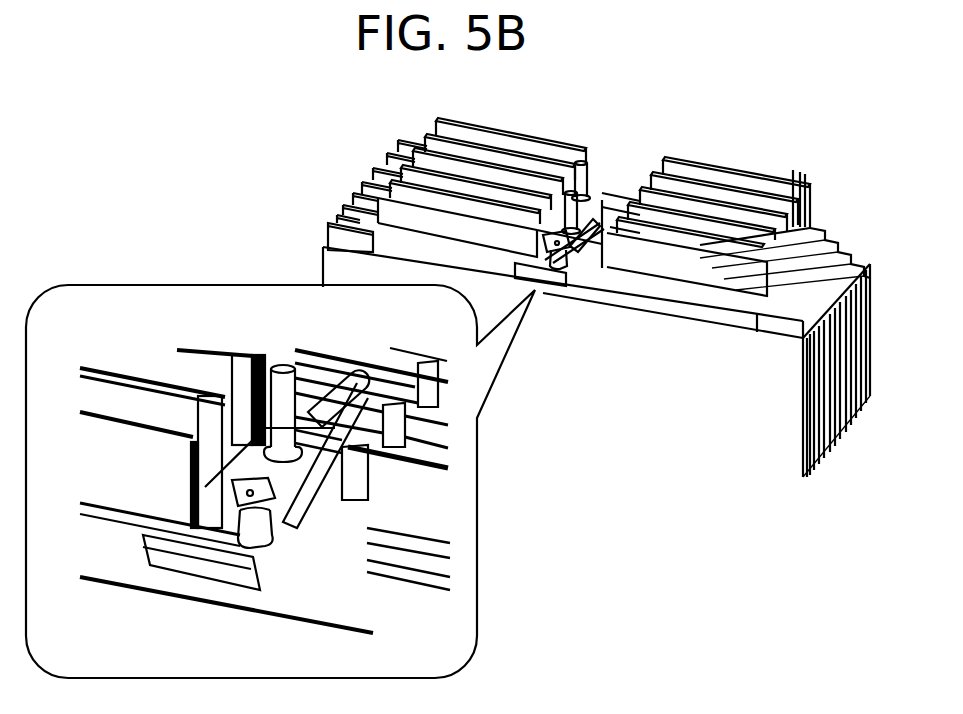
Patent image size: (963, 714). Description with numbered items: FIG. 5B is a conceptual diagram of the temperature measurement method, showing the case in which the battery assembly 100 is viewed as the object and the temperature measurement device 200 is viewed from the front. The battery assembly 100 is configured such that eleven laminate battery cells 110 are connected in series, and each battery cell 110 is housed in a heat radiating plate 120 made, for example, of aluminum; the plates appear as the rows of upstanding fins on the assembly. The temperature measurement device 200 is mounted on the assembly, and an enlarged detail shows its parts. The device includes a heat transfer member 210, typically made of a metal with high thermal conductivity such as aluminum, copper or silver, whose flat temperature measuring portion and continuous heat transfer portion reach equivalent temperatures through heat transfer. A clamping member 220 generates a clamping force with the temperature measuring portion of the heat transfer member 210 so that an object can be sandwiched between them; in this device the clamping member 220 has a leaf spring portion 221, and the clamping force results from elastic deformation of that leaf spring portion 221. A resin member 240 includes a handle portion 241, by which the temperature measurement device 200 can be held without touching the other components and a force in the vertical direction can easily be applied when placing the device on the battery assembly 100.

The battery assembly 100 is at (797, 141).
The laminate battery cell 110 is at (410, 138).
The heat radiating plate 120 is at (785, 417).
The temperature measurement device 200 is at (603, 185).
The heat transfer member 210 is at (280, 548).
The clamping member 220 is at (228, 580).
The leaf spring portion 221 is at (210, 553).
The resin member 240 is at (357, 388).
The handle portion 241 is at (288, 393).